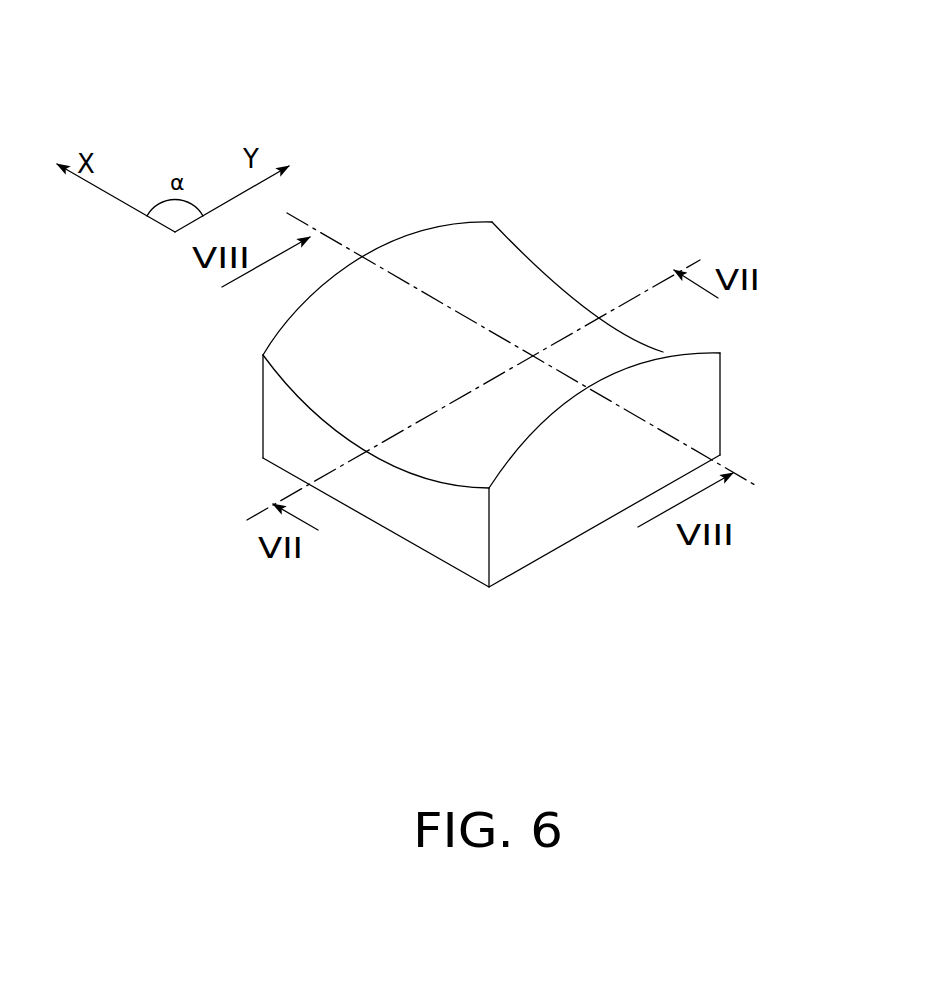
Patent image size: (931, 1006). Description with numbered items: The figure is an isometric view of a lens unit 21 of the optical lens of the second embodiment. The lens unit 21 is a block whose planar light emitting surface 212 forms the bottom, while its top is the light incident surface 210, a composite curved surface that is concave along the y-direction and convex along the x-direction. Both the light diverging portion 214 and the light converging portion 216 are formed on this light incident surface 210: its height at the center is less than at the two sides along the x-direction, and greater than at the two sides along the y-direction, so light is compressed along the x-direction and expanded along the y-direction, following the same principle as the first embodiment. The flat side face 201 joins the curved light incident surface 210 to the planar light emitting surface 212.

The lens unit 21 is at (352, 77).
The side surface 201 is at (721, 385).
The light incident surface 210 is at (508, 287).
The light emitting surface 212 is at (562, 550).
The light diverging portion 214 is at (398, 270).
The light converging portion 216 is at (547, 332).